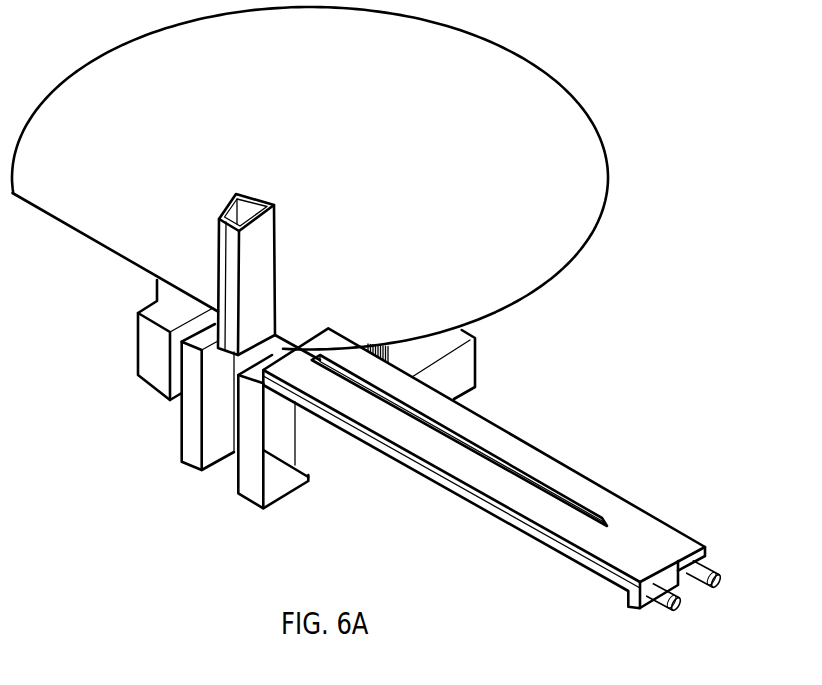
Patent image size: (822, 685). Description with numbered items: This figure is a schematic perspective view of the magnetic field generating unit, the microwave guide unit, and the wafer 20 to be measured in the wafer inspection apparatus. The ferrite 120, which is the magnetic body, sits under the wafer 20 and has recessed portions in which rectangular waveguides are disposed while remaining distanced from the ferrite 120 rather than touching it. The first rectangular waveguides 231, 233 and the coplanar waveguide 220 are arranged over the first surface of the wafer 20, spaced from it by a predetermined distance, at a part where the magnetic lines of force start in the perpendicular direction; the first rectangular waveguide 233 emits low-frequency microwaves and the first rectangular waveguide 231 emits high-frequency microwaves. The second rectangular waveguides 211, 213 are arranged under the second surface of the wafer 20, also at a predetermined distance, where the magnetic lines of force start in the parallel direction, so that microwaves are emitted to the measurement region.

The wafer 20 is at (78, 72).
The ferrite 120 is at (141, 377).
The second rectangular waveguide 211 is at (188, 453).
The second rectangular waveguide 213 is at (252, 495).
The coplanar waveguide 220 is at (618, 500).
The first rectangular waveguide 231 is at (218, 210).
The first rectangular waveguide 233 is at (231, 274).